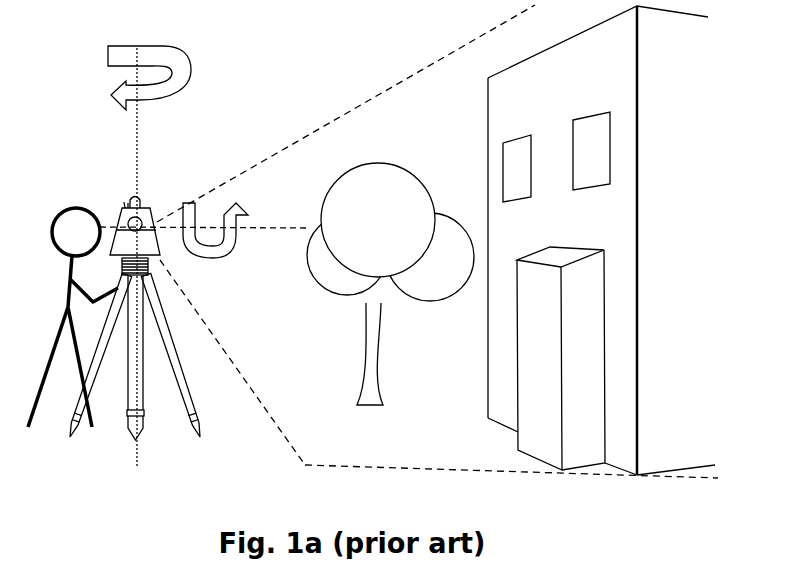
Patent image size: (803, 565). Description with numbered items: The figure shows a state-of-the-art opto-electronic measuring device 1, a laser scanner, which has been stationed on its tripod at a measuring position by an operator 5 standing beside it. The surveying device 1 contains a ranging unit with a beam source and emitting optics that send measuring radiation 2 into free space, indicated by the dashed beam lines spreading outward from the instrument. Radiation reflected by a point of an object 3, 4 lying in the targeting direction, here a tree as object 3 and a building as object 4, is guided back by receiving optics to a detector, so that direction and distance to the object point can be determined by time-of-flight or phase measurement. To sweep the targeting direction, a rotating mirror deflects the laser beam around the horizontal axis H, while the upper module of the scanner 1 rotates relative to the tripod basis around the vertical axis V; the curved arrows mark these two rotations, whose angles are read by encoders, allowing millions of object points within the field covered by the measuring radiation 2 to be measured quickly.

The opto-electronic measuring device 1 is at (110, 195).
The measuring radiation 2 is at (352, 123).
The object 3 is at (387, 216).
The object 4 is at (553, 105).
The operator 5 is at (72, 235).
The vertical axis V is at (142, 145).
The horizontal axis H is at (167, 227).